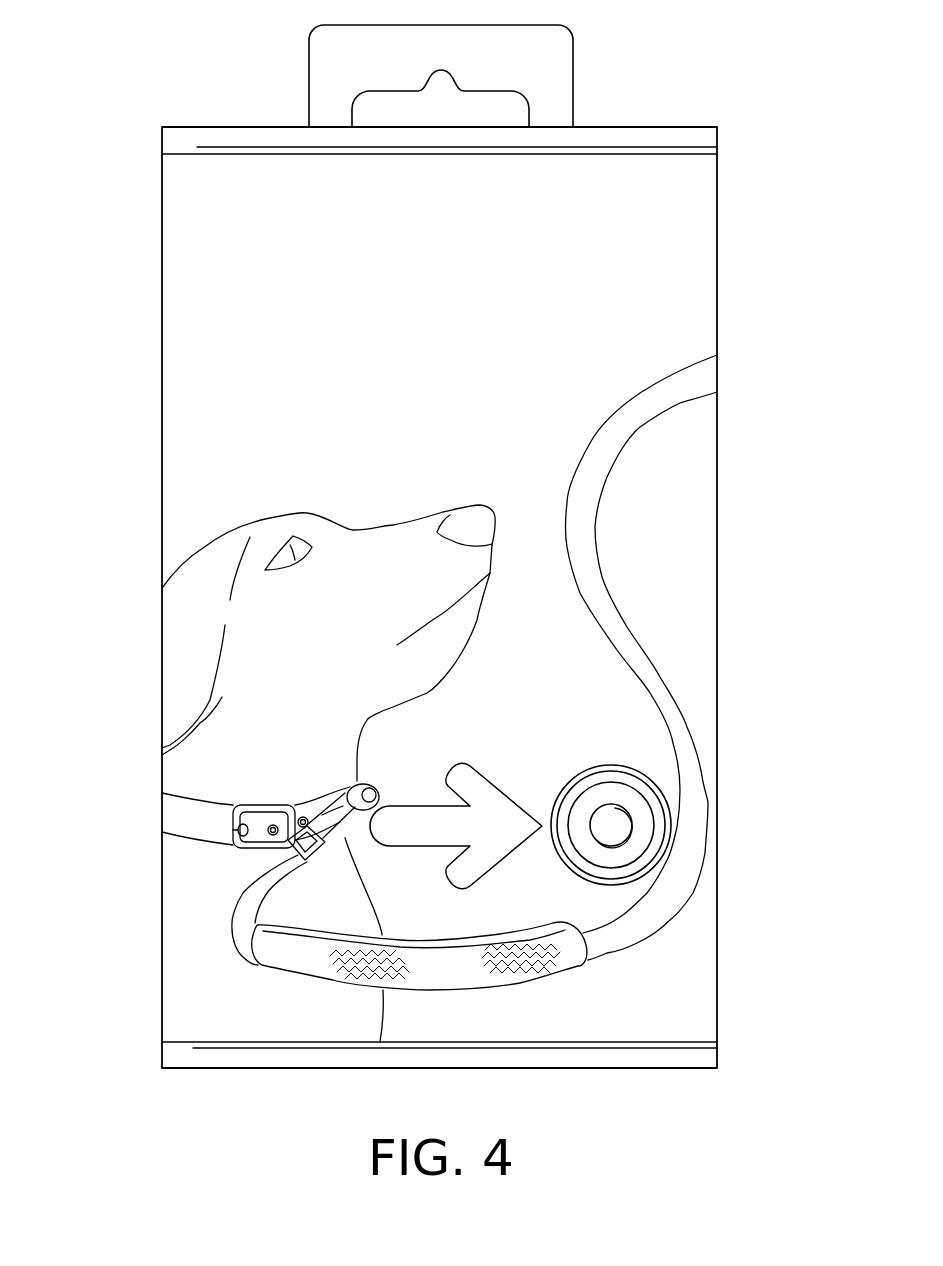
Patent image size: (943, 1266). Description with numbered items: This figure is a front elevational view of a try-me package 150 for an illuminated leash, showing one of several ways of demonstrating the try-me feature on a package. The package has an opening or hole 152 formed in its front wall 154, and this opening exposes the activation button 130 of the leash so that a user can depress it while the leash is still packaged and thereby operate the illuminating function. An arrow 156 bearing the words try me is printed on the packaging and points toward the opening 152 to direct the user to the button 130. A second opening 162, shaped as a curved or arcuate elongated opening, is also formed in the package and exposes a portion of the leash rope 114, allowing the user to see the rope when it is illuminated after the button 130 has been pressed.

The try-me package 150 is at (125, 444).
The front wall 154 is at (181, 333).
The arrow 156 is at (473, 762).
The opening 152 is at (637, 770).
The button 130 is at (615, 827).
The second opening 162 is at (548, 980).
The leash rope 114 is at (307, 960).